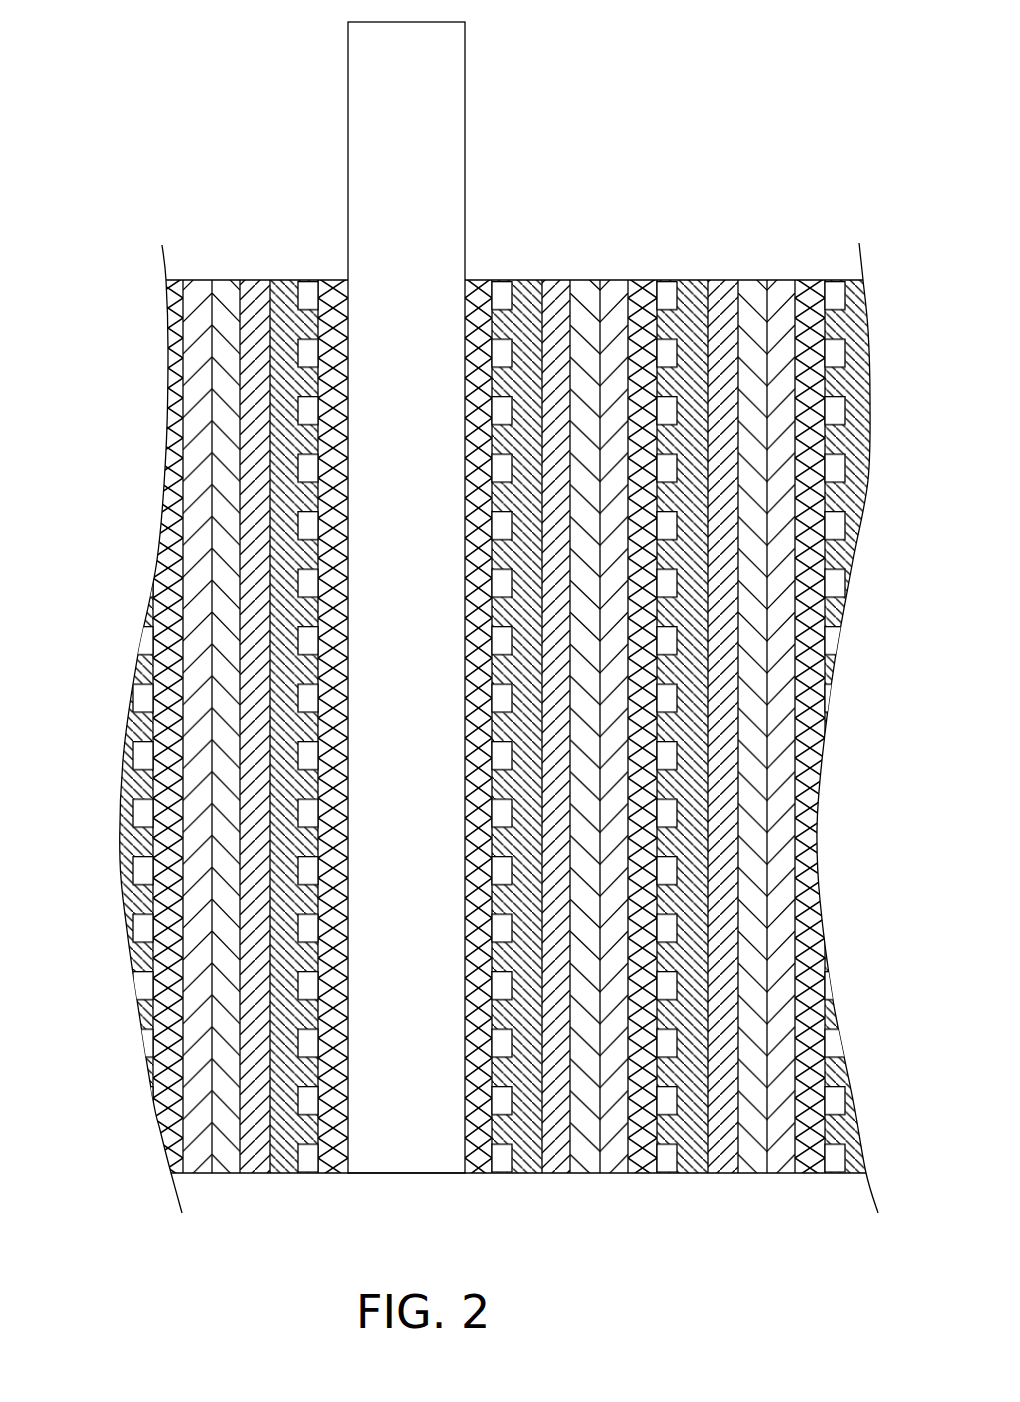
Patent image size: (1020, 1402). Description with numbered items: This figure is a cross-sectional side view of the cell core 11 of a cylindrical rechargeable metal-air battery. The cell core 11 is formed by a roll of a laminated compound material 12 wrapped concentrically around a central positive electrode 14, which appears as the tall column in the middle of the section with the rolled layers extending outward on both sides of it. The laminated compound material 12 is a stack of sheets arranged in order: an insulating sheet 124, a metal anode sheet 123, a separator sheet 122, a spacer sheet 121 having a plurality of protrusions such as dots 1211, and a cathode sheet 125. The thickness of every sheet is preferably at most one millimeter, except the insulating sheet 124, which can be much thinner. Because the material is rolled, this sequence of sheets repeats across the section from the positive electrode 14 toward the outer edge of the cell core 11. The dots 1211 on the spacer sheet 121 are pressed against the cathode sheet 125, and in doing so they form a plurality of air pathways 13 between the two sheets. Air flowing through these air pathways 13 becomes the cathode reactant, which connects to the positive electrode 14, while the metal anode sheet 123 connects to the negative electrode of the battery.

The cell core 11 is at (471, 647).
The laminated compound material 12 is at (625, 1190).
The spacer sheet 121 is at (283, 278).
The dots 1211 is at (520, 1185).
The separator sheet 122 is at (566, 278).
The metal anode sheet 123 is at (223, 318).
The insulating sheet 124 is at (830, 679).
The cathode sheet 125 is at (335, 1190).
The air pathways 13 is at (503, 275).
The positive electrode 14 is at (366, 78).